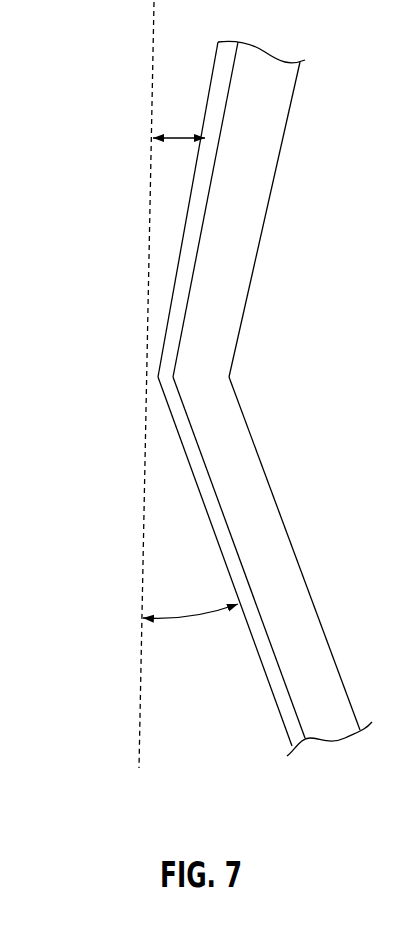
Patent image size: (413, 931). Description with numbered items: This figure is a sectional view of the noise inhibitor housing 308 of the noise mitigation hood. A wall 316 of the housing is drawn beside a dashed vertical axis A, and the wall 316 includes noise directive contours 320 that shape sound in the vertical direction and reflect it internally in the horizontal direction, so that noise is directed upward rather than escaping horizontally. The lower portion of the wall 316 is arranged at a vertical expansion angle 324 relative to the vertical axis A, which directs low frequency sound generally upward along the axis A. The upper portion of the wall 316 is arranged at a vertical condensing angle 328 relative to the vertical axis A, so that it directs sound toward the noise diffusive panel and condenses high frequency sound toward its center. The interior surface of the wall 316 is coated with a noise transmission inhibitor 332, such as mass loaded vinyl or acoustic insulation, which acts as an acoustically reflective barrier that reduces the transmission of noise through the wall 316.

The noise inhibitor housing 308 is at (101, 158).
The noise directive contours 320 is at (119, 358).
The vertical condensing angle 328 is at (172, 137).
The noise transmission inhibitor 332 is at (242, 243).
The vertical expansion angle 324 is at (183, 619).
The wall 316 is at (278, 679).
The vertical axis A is at (140, 718).